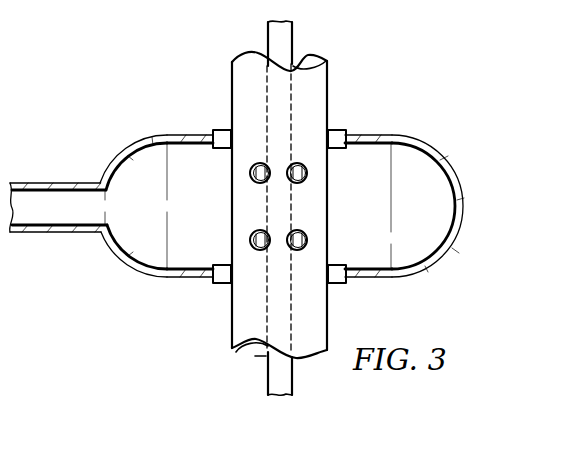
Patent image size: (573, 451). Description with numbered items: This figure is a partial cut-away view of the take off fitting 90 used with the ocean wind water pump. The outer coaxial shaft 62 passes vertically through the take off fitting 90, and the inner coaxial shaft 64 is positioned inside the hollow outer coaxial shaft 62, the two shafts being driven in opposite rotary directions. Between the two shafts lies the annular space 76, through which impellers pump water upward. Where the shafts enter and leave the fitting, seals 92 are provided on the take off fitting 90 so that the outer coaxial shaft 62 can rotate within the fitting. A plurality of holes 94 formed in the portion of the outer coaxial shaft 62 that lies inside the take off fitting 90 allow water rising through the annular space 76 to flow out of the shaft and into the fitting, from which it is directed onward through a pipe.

The outer coaxial shaft 62 is at (231, 92).
The inner coaxial shaft 64 is at (293, 36).
The annular space 76 is at (254, 356).
The take off fitting 90 is at (143, 274).
The seals 92 is at (339, 130).
The holes 94 is at (250, 177).